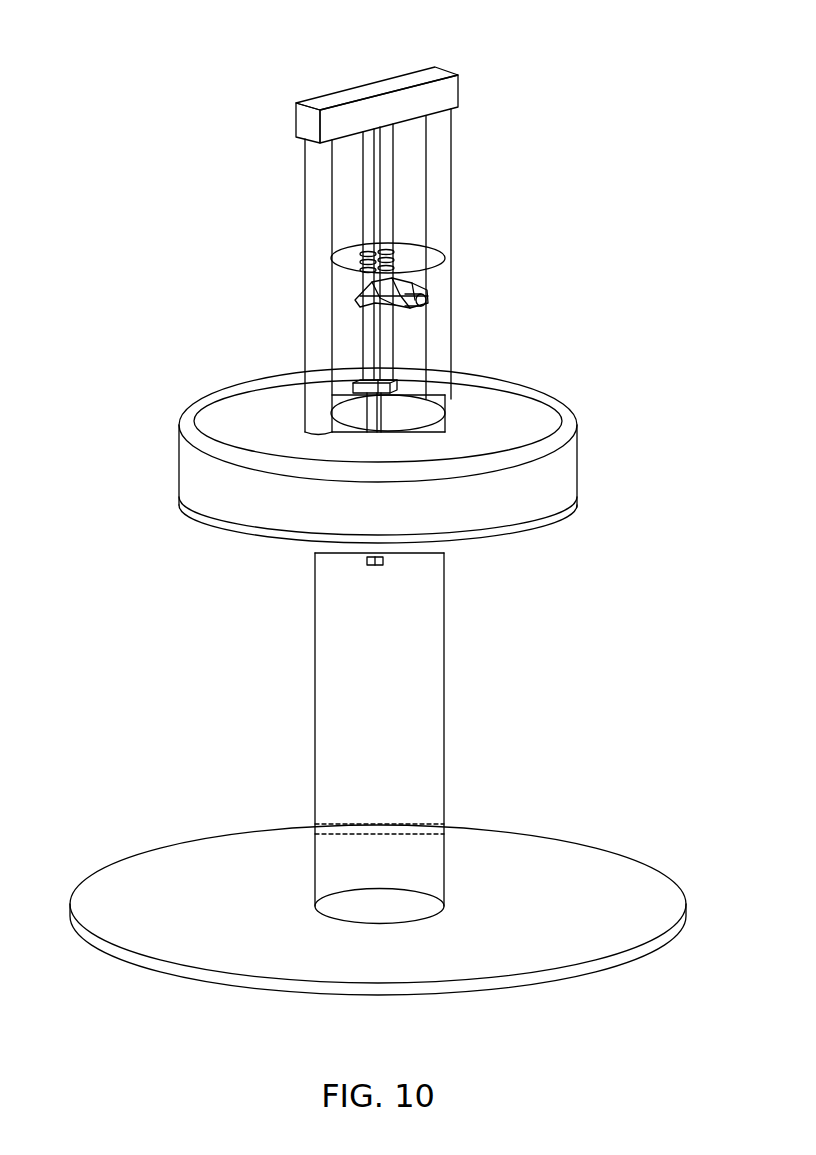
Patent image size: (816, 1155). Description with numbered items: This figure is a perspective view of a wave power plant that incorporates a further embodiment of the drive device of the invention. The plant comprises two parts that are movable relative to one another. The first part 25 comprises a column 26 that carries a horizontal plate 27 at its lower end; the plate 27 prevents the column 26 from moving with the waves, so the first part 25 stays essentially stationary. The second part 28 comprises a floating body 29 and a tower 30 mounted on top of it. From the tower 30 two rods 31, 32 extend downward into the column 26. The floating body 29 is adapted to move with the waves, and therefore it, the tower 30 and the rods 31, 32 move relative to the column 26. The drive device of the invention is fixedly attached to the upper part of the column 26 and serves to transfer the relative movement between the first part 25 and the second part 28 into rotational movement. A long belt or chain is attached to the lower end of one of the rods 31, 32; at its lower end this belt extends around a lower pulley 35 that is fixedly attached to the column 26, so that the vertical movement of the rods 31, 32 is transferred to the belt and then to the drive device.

The first part 25 is at (440, 703).
The column 26 is at (388, 783).
The horizontal plate 27 is at (553, 895).
The second part 28 is at (500, 385).
The floating body 29 is at (557, 467).
The tower 30 is at (432, 88).
The rod 31 is at (382, 177).
The rod 32 is at (363, 185).
The lower pulley 35 is at (383, 563).